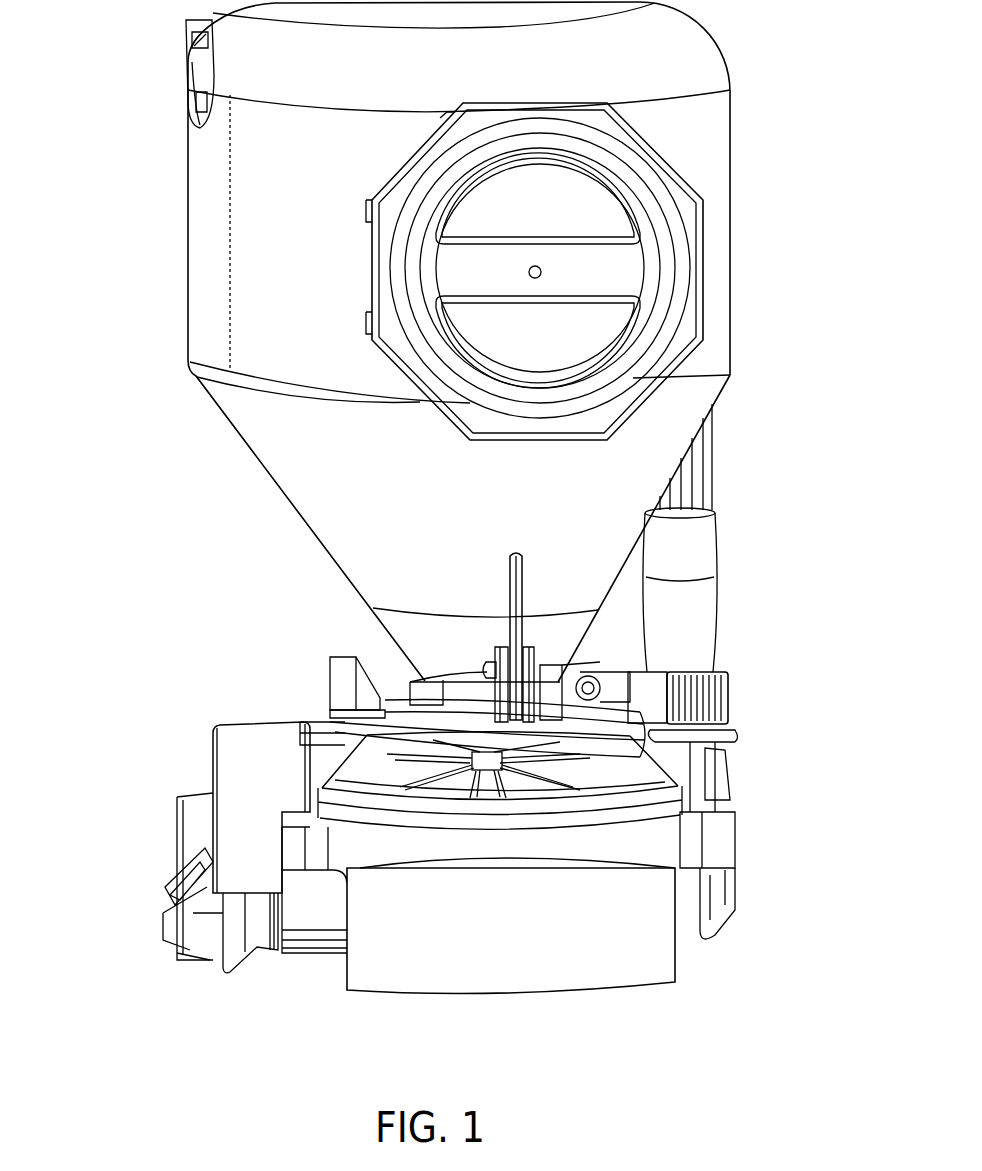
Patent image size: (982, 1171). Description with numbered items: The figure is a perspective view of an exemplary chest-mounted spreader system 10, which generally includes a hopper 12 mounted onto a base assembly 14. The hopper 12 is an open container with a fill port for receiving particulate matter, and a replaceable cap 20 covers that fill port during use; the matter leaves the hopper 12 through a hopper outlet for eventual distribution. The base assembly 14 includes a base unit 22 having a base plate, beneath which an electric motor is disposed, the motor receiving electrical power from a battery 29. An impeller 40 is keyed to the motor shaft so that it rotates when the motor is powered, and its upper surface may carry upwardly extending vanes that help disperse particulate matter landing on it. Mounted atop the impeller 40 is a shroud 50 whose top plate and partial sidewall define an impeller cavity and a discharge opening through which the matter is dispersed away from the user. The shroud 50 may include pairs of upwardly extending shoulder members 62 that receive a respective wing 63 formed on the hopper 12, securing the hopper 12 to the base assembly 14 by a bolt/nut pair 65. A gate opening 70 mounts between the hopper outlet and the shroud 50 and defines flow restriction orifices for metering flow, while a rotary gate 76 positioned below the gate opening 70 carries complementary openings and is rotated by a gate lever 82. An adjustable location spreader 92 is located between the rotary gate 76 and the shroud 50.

The chest-mounted spreader system 10 is at (140, 252).
The hopper 12 is at (735, 198).
The base assembly 14 is at (240, 700).
The replaceable cap 20 is at (408, 170).
The base unit 22 is at (632, 970).
The battery 29 is at (215, 945).
The impeller 40 is at (538, 790).
The shroud 50 is at (627, 718).
The shoulder members 62 is at (493, 658).
The wing 63 is at (523, 588).
The bolt/nut pair 65 is at (486, 678).
The gate opening 70 is at (560, 686).
The rotary gate 76 is at (352, 666).
The gate lever 82 is at (733, 700).
The adjustable location spreader 92 is at (330, 708).